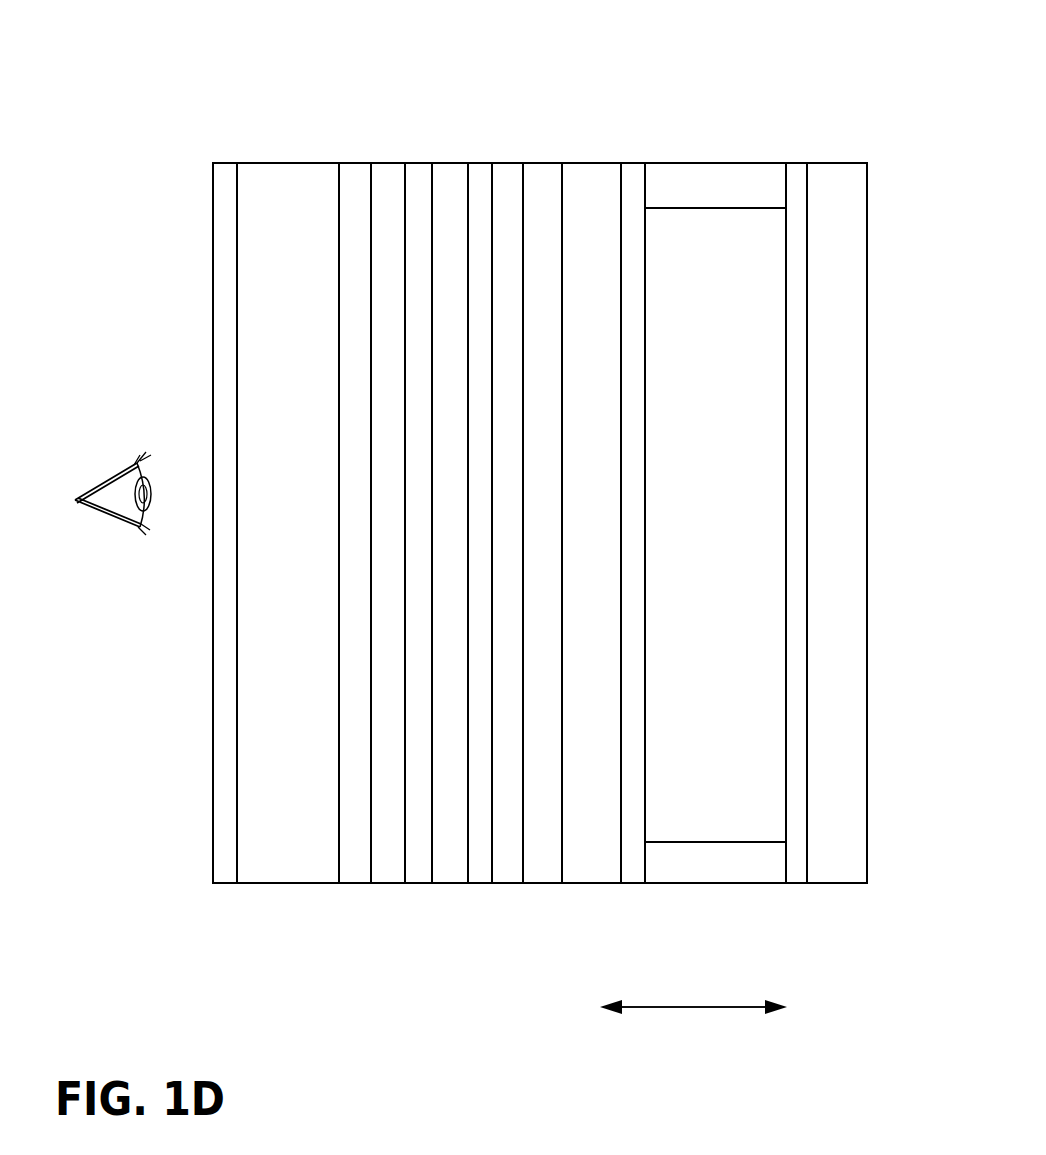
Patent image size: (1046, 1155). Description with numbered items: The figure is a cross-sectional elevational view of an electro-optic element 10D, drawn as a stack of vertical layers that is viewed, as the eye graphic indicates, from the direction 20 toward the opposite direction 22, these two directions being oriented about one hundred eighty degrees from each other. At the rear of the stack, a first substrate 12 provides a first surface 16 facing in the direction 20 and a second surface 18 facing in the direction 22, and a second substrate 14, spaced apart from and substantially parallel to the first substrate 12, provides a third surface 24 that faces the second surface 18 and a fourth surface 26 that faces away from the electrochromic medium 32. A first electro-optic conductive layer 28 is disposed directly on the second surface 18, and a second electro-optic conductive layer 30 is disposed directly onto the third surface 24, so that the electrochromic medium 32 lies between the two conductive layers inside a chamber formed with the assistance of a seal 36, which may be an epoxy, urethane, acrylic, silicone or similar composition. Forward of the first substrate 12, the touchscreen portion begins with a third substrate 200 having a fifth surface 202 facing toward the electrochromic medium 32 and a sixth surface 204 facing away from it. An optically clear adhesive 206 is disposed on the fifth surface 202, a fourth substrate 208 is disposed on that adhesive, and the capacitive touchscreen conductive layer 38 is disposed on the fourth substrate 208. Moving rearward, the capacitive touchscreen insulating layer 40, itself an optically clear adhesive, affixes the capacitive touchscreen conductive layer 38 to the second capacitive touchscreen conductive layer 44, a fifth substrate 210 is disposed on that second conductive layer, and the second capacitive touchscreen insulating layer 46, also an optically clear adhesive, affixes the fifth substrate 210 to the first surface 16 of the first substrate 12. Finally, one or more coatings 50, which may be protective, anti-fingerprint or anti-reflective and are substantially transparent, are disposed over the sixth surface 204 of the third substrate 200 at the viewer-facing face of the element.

The electro-optic element 10D is at (126, 151).
The first substrate 12 is at (575, 284).
The second substrate 14 is at (821, 290).
The first surface 16 is at (560, 847).
The second surface 18 is at (621, 847).
The direction 20 is at (674, 1017).
The direction 22 is at (715, 1017).
The third surface 24 is at (807, 690).
The fourth surface 26 is at (867, 588).
The first electro-optic conductive layer 28 is at (628, 175).
The second electro-optic conductive layer 30 is at (795, 175).
The electrochromic medium 32 is at (682, 502).
The seal 36 is at (680, 196).
The capacitive touchscreen conductive layer 38 is at (419, 175).
The capacitive touchscreen insulating layer 40 is at (450, 172).
The second capacitive touchscreen conductive layer 44 is at (477, 172).
The second capacitive touchscreen insulating layer 46 is at (542, 170).
The coatings 50 is at (225, 175).
The third substrate 200 is at (282, 172).
The fifth surface 202 is at (339, 842).
The sixth surface 204 is at (237, 842).
The optically clear adhesive 206 is at (355, 172).
The fourth substrate 208 is at (389, 172).
The fifth substrate 210 is at (507, 177).